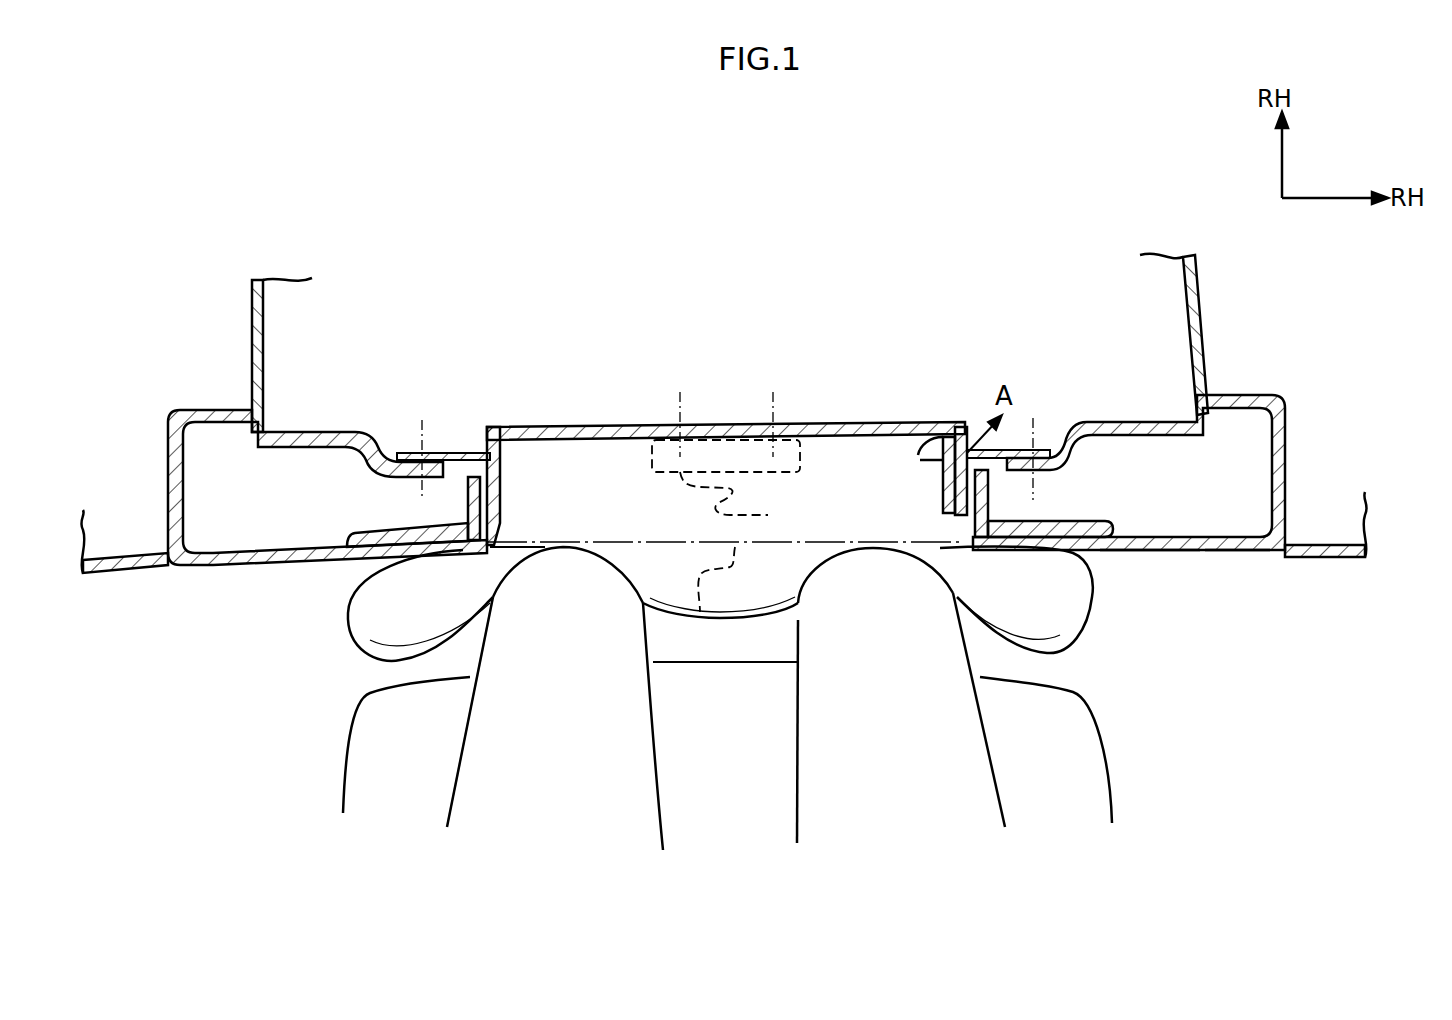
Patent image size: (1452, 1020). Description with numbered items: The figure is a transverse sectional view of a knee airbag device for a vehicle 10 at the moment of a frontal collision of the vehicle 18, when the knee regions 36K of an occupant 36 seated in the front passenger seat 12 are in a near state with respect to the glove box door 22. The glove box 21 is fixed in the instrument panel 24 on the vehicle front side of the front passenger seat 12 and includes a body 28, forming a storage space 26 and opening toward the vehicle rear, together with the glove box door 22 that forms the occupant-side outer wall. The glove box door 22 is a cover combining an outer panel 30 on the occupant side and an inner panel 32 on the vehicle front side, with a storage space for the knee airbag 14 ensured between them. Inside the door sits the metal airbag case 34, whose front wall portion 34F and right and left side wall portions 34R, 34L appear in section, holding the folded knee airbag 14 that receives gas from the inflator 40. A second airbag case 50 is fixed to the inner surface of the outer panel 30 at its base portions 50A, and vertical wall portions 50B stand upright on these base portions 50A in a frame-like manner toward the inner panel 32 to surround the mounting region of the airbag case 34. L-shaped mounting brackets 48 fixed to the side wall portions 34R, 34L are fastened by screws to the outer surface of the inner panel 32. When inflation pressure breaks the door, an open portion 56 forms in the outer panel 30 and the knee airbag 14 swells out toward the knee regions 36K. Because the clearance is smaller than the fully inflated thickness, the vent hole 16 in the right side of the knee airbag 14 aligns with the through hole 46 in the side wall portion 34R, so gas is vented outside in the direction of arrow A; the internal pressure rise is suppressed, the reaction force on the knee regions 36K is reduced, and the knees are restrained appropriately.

The knee airbag device for a vehicle 10 is at (1332, 660).
The front passenger seat 12 is at (1117, 787).
The knee airbag 14 is at (1080, 647).
The vent hole 16 is at (953, 466).
The vehicle 18 is at (1357, 636).
The glove box 21 is at (1283, 350).
The glove box door 22 is at (1222, 568).
The instrument panel 24 is at (130, 575).
The storage space 26 is at (735, 275).
The body 28 is at (252, 336).
The outer panel 30 is at (1150, 556).
The inner panel 32 is at (338, 432).
The airbag case 34 is at (761, 465).
The front wall portion 34F is at (726, 438).
The side wall portion on the vehicle left side 34L is at (503, 475).
The side wall portion on the vehicle right side 34R is at (940, 550).
The occupant 36 is at (769, 657).
The knee regions 36K is at (578, 542).
The inflator 40 is at (742, 501).
The through hole 46 is at (962, 448).
The mounting brackets 48 is at (438, 452).
The second airbag case 50 is at (712, 447).
The base portions 50A is at (370, 535).
The vertical wall portions 50B is at (465, 500).
The open portion 56 is at (706, 626).